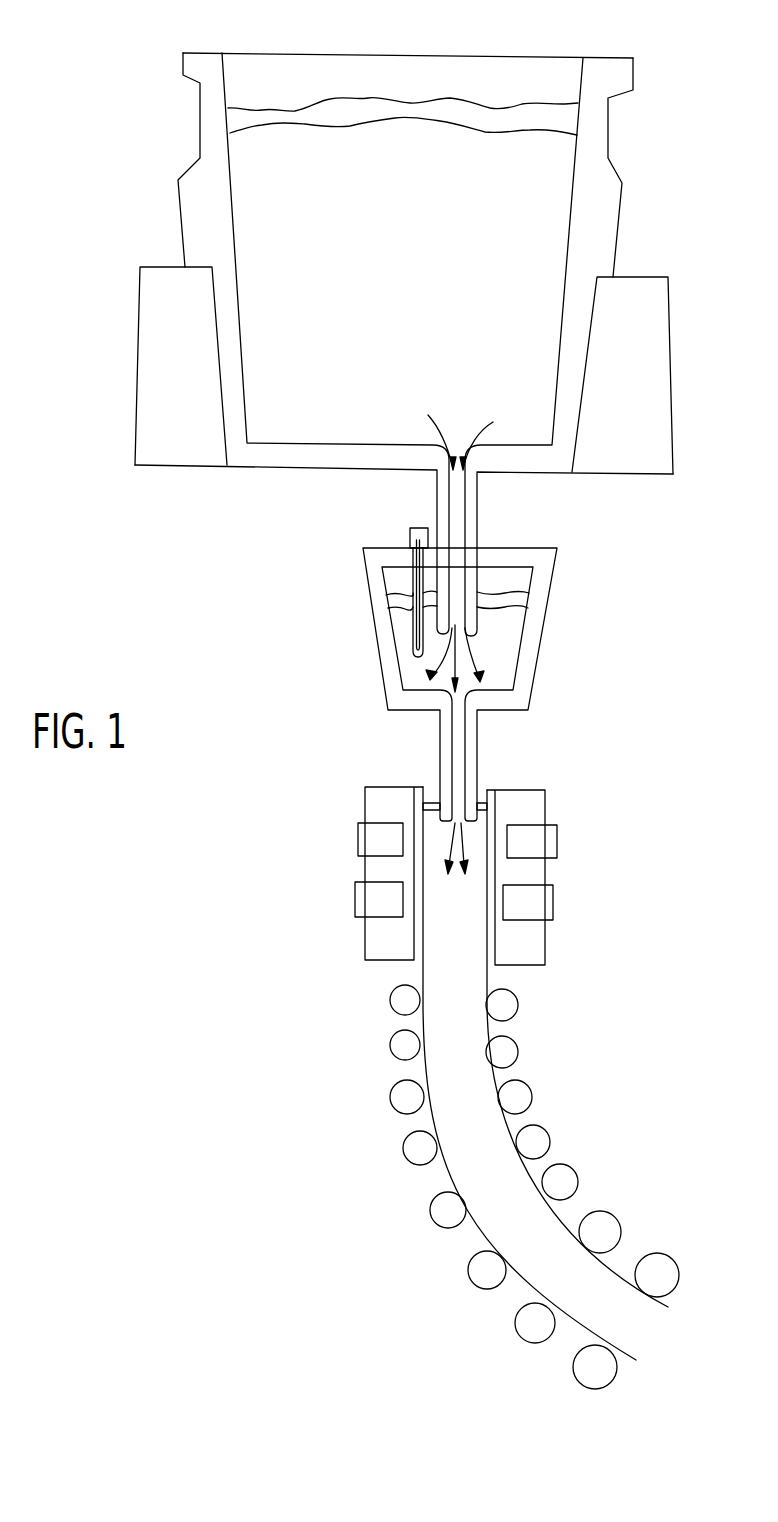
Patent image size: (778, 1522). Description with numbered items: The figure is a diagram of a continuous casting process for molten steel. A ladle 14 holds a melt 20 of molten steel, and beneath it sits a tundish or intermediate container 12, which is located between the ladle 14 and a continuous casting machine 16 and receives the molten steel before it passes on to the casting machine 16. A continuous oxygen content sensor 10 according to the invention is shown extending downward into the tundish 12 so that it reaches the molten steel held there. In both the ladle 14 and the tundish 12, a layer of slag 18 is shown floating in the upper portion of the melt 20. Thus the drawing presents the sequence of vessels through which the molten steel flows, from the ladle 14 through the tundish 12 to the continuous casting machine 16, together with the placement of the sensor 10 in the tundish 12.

The continuous oxygen content sensor 10 is at (412, 575).
The tundish 12 is at (545, 617).
The ladle 14 is at (622, 196).
The continuous casting machine 16 is at (535, 1012).
The layer of slag 18 is at (512, 107).
The melt 20 is at (524, 240).